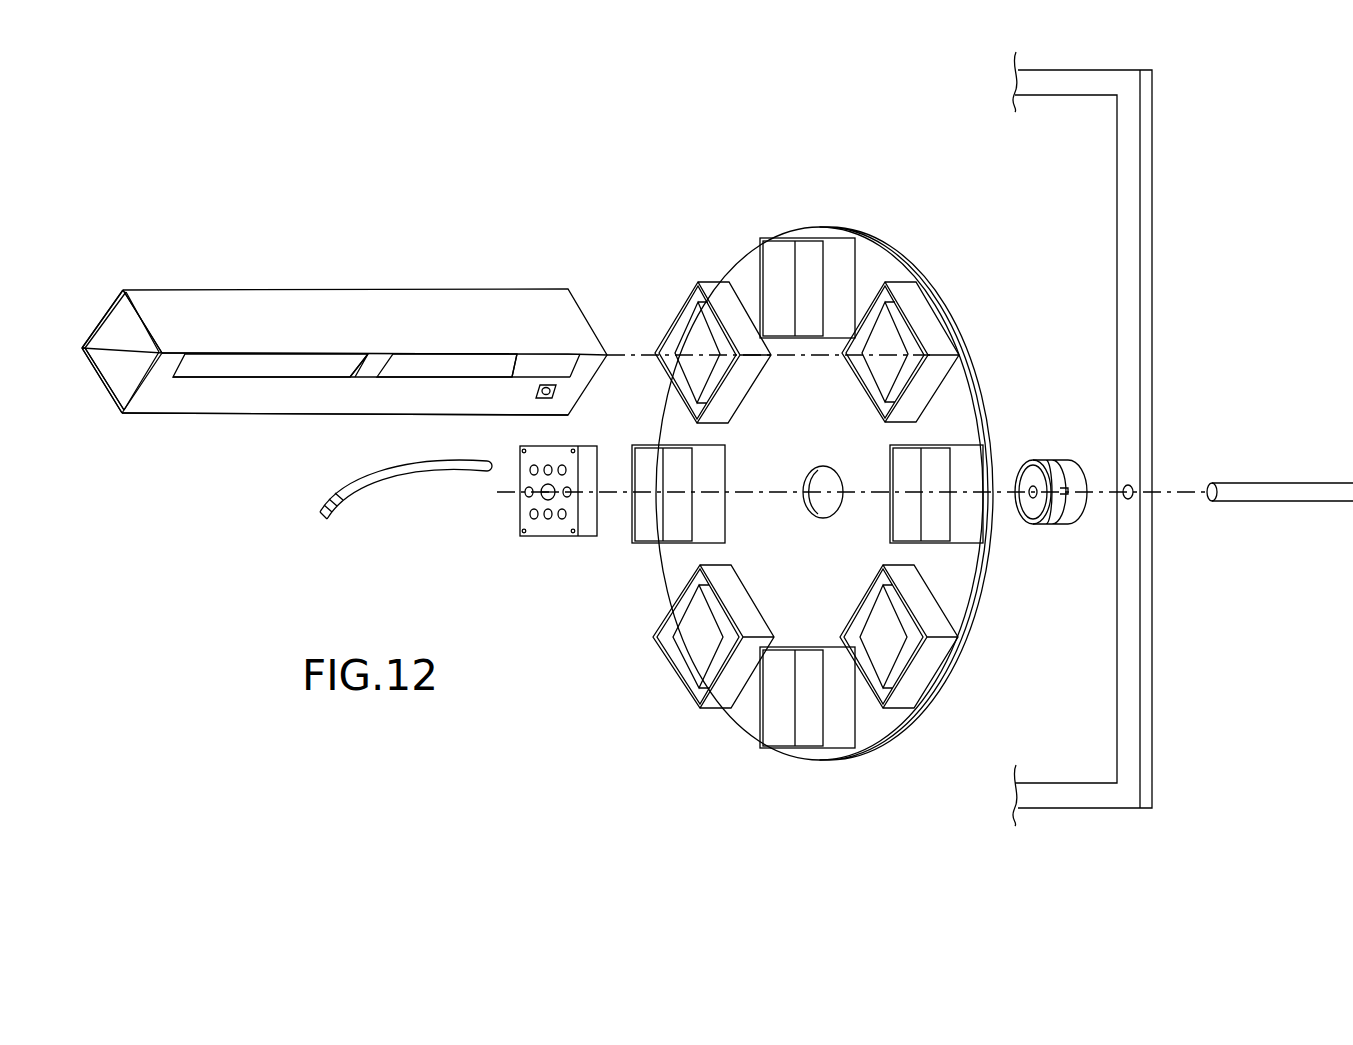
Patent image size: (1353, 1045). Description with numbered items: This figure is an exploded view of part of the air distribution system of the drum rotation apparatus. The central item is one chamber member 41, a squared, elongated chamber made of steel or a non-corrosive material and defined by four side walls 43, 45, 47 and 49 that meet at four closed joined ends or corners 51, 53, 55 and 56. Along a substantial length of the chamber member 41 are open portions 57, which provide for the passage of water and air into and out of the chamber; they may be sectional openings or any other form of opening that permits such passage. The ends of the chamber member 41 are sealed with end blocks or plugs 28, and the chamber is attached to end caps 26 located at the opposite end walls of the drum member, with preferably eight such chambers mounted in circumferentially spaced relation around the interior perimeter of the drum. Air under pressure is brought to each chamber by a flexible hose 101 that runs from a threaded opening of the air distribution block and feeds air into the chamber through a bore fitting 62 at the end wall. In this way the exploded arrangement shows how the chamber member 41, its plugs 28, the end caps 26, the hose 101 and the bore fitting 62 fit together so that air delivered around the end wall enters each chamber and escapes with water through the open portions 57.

The end cap 26 is at (698, 307).
The end block 28 is at (137, 340).
The chamber member 41 is at (282, 300).
The side wall 43 is at (172, 323).
The side wall 45 is at (108, 318).
The side wall 47 is at (93, 375).
The side wall 49 is at (143, 400).
The closed joined end 51 is at (125, 288).
The closed joined end 53 is at (80, 350).
The closed joined end 55 is at (122, 413).
The closed joined end 56 is at (177, 357).
The open portion 57 is at (293, 367).
The bore fitting 62 is at (544, 398).
The flexible hose 101 is at (375, 475).